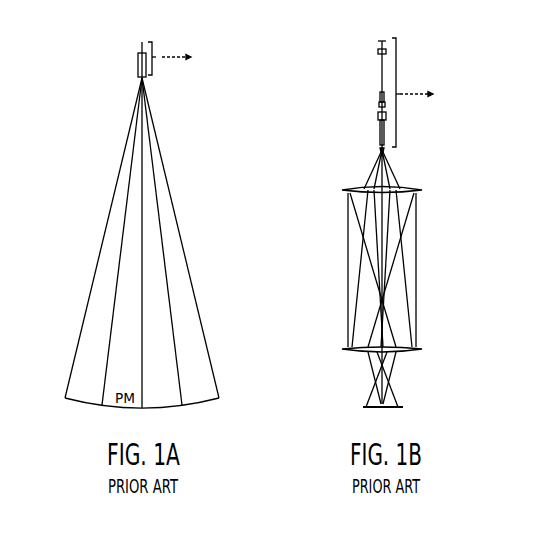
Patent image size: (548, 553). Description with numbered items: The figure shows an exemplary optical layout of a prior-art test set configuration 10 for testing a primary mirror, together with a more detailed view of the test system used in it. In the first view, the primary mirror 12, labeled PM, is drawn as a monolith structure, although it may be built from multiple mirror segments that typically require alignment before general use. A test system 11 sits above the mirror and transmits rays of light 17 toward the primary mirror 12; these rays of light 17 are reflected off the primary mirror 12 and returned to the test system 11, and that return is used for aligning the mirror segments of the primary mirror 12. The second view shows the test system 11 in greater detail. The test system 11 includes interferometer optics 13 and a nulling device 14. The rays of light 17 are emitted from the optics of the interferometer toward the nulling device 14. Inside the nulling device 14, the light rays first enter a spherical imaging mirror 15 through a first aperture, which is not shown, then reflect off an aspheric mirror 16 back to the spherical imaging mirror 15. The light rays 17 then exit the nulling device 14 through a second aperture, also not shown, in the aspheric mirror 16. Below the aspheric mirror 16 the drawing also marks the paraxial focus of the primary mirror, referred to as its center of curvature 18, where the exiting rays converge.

In FIG. 1A, the test set configuration 10 is at (147, 28).
In FIG. 1A, the test system 11 is at (153, 68).
In FIG. 1B, the test system 11 is at (387, 28).
In FIG. 1A, the primary mirror 12 is at (133, 410).
In FIG. 1B, the interferometer optics 13 is at (399, 118).
In FIG. 1B, the nulling device 14 is at (331, 221).
In FIG. 1B, the spherical imaging mirror 15 is at (405, 187).
In FIG. 1B, the aspheric mirror 16 is at (398, 353).
In FIG. 1A, the rays of light 17 is at (122, 246).
In FIG. 1B, the rays of light 17 is at (405, 250).
In FIG. 1B, the center of curvature 18 is at (393, 410).